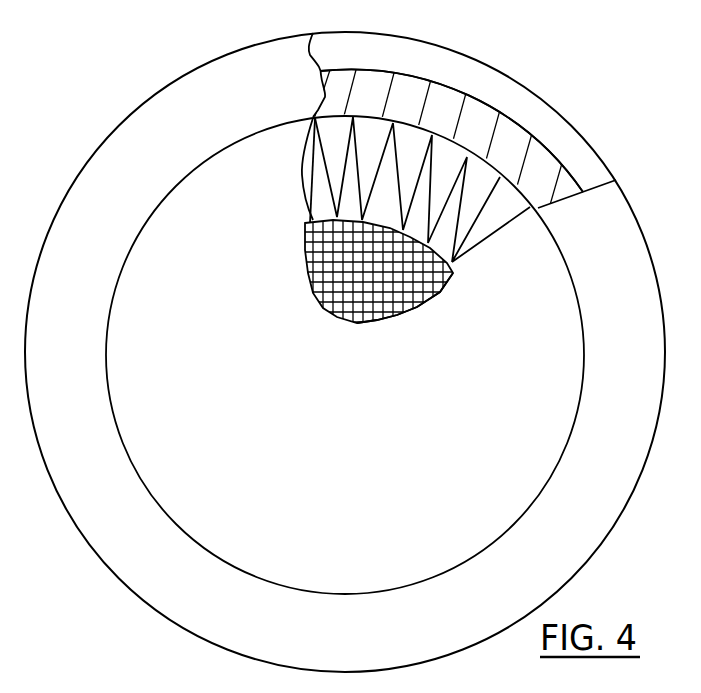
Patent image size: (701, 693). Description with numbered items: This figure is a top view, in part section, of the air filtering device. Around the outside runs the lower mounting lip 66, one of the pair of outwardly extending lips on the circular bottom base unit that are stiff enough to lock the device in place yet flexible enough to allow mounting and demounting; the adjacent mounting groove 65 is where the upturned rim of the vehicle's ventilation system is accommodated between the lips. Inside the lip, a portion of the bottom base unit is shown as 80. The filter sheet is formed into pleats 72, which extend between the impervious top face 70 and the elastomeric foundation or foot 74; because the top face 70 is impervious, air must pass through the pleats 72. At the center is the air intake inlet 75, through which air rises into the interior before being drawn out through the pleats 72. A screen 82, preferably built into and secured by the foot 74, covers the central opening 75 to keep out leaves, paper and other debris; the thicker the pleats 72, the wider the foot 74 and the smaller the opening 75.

The mounting groove 65 is at (517, 105).
The lower mounting lip 66 is at (563, 117).
The top face 70 is at (277, 449).
The pleats 72 is at (485, 210).
The elastomeric foundation or foot 74 is at (92, 452).
The central opening or air intake inlet 75 is at (427, 302).
The portion of the bottom base unit 80 is at (474, 136).
The screen 82 is at (378, 288).